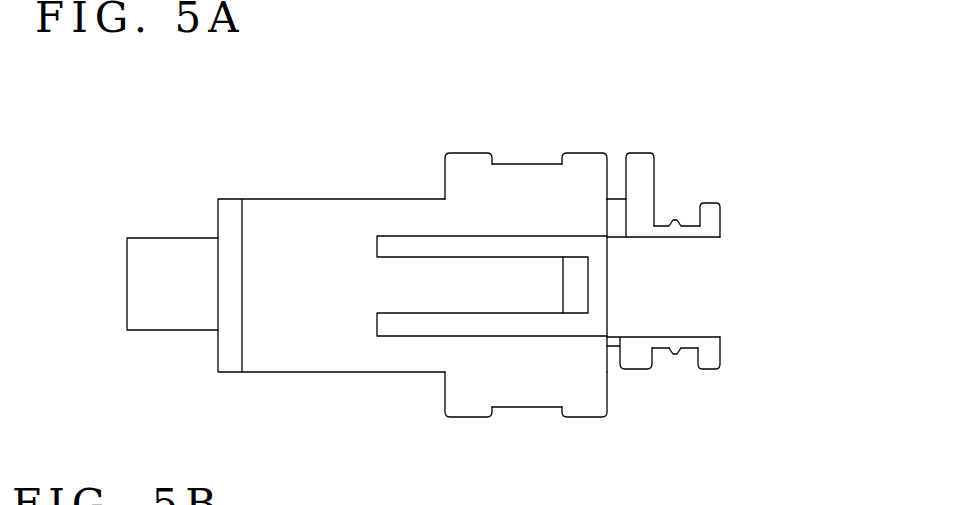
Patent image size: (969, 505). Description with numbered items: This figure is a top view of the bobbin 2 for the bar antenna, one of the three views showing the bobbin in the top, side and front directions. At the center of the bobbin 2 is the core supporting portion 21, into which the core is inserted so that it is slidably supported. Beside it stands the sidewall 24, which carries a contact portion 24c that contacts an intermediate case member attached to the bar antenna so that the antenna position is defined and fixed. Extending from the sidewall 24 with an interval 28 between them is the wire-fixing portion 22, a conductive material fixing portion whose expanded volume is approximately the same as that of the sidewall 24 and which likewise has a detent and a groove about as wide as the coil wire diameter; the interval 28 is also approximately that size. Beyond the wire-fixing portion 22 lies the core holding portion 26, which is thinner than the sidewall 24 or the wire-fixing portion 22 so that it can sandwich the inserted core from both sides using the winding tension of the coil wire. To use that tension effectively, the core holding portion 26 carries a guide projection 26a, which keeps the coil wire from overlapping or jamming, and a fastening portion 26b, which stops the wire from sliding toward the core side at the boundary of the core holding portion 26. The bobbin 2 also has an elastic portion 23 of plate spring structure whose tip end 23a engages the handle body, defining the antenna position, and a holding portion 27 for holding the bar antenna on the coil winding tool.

The bobbin 2 is at (204, 159).
The core supporting portion 21 is at (616, 258).
The wire-fixing portion 22 is at (638, 165).
The elastic portion 23 is at (410, 283).
The tip end 23a is at (580, 280).
The sidewall 24 is at (444, 185).
The contact portion 24c is at (468, 152).
The core holding portion 26 is at (686, 218).
The guide projection 26a is at (673, 355).
The fastening portion 26b is at (715, 212).
The holding portion 27 is at (143, 284).
The interval 28 is at (616, 178).